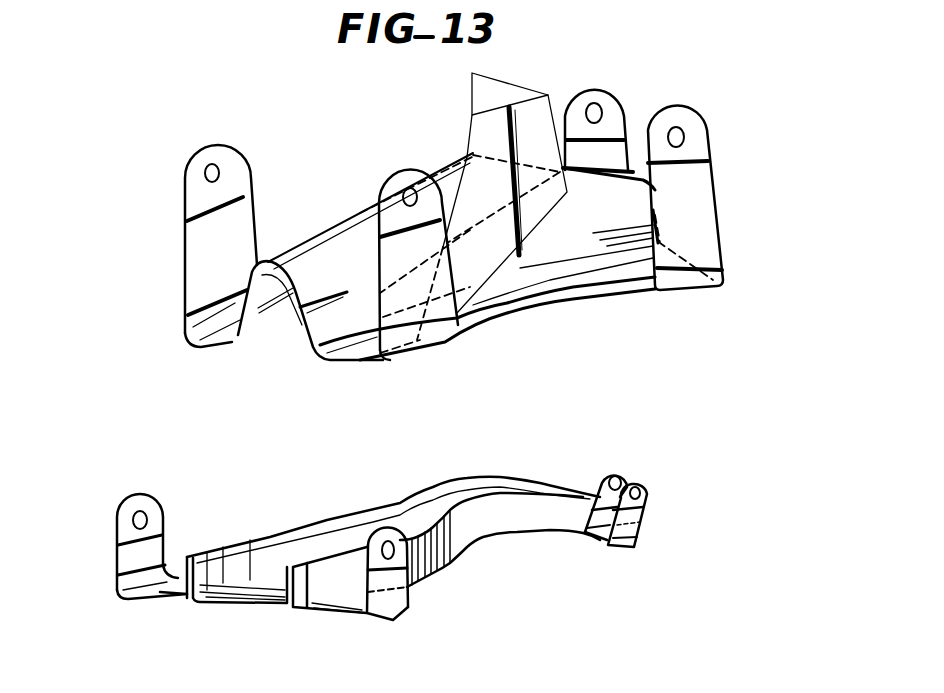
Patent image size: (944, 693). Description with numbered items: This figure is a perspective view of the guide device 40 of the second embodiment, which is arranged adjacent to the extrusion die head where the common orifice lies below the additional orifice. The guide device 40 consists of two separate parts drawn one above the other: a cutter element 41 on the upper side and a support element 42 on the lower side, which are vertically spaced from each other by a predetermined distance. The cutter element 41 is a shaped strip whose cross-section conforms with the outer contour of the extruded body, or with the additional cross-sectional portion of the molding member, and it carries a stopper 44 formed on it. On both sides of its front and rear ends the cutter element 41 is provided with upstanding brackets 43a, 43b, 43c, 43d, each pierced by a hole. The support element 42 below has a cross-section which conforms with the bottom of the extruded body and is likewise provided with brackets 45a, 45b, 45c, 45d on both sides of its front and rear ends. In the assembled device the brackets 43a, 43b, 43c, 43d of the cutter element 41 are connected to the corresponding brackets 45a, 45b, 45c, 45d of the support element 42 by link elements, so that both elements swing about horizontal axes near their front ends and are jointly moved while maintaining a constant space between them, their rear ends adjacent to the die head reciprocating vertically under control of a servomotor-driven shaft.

The guide device 40 is at (117, 297).
The cutter element 41 is at (338, 247).
The support element 42 is at (483, 540).
The bracket 43a is at (713, 160).
The bracket 43b is at (607, 100).
The bracket 43c is at (403, 167).
The bracket 43d is at (223, 157).
The stopper 44 is at (523, 83).
The bracket 45a is at (647, 490).
The bracket 45b is at (613, 475).
The bracket 45c is at (407, 597).
The bracket 45d is at (140, 497).